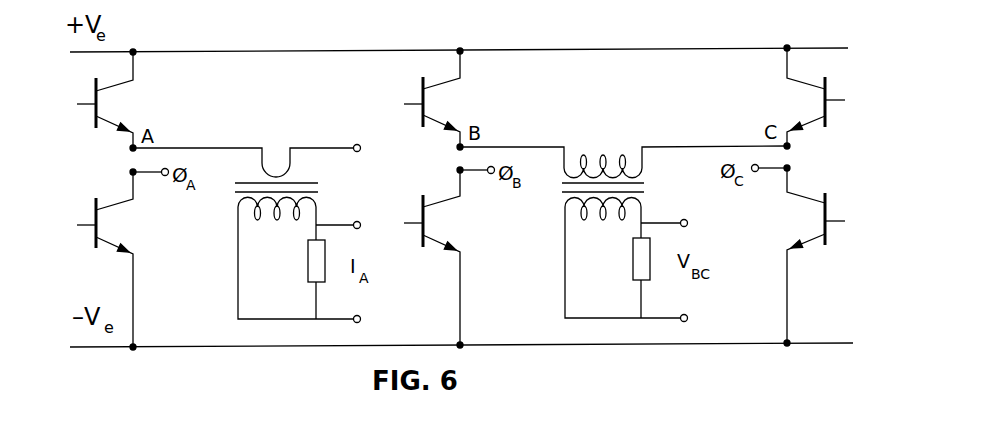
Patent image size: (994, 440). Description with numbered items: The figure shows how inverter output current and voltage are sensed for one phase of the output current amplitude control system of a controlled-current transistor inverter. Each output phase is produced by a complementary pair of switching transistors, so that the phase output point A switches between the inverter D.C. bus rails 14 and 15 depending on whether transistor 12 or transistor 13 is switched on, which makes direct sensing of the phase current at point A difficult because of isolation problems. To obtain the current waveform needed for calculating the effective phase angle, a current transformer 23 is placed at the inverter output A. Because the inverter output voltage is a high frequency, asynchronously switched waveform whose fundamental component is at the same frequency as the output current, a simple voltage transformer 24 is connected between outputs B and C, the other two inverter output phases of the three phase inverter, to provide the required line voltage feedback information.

The transistor 12 is at (114, 210).
The transistor 13 is at (114, 90).
The D.C. bus rail 14 is at (101, 347).
The D.C. bus rail 15 is at (97, 53).
The current transformer 23 is at (319, 190).
The voltage transformer 24 is at (554, 192).